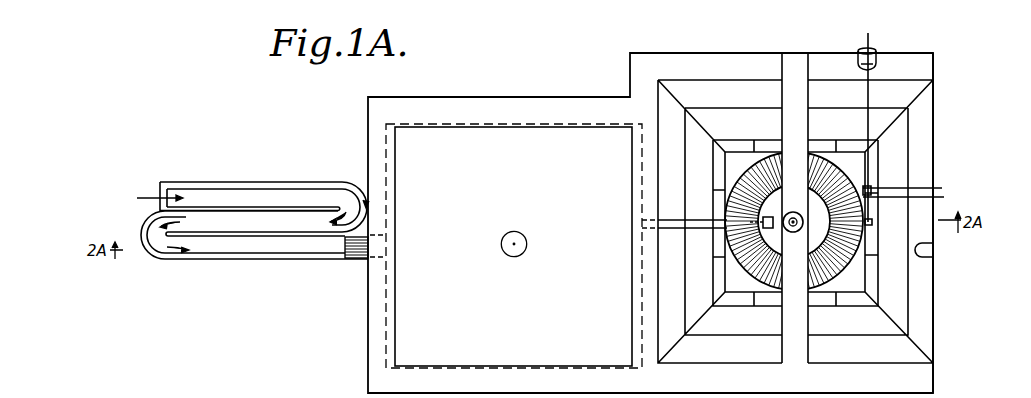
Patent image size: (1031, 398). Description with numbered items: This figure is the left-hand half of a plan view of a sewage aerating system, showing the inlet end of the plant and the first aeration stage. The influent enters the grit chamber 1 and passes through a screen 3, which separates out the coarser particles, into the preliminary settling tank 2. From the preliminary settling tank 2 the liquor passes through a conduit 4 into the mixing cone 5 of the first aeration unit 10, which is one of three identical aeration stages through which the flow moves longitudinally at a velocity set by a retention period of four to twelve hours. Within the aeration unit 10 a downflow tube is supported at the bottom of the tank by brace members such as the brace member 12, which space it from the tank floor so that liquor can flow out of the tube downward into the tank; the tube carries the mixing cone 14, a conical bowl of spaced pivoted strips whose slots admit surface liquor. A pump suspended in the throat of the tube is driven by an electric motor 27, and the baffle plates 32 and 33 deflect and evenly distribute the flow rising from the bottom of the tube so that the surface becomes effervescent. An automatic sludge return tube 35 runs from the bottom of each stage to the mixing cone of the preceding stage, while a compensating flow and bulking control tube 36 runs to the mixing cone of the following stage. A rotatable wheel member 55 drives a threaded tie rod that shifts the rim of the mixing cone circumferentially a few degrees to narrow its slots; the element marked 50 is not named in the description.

The grit chamber 1 is at (246, 181).
The preliminary settling tank 2 is at (465, 97).
The screen 3 is at (353, 259).
The conduit 4 is at (692, 223).
The mixing cone 5 is at (812, 243).
The aeration unit 10 is at (722, 58).
The brace member 12 is at (933, 52).
The mixing cone 14 is at (815, 191).
The electric motor 27 is at (800, 205).
The baffle plate 32 is at (777, 289).
The baffle plate 33 is at (774, 320).
The automatic sludge return tube 35 is at (913, 189).
The compensating flow and bulking control tube 36 is at (933, 250).
The rod 50 is at (869, 90).
The rotatable wheel member 55 is at (858, 50).